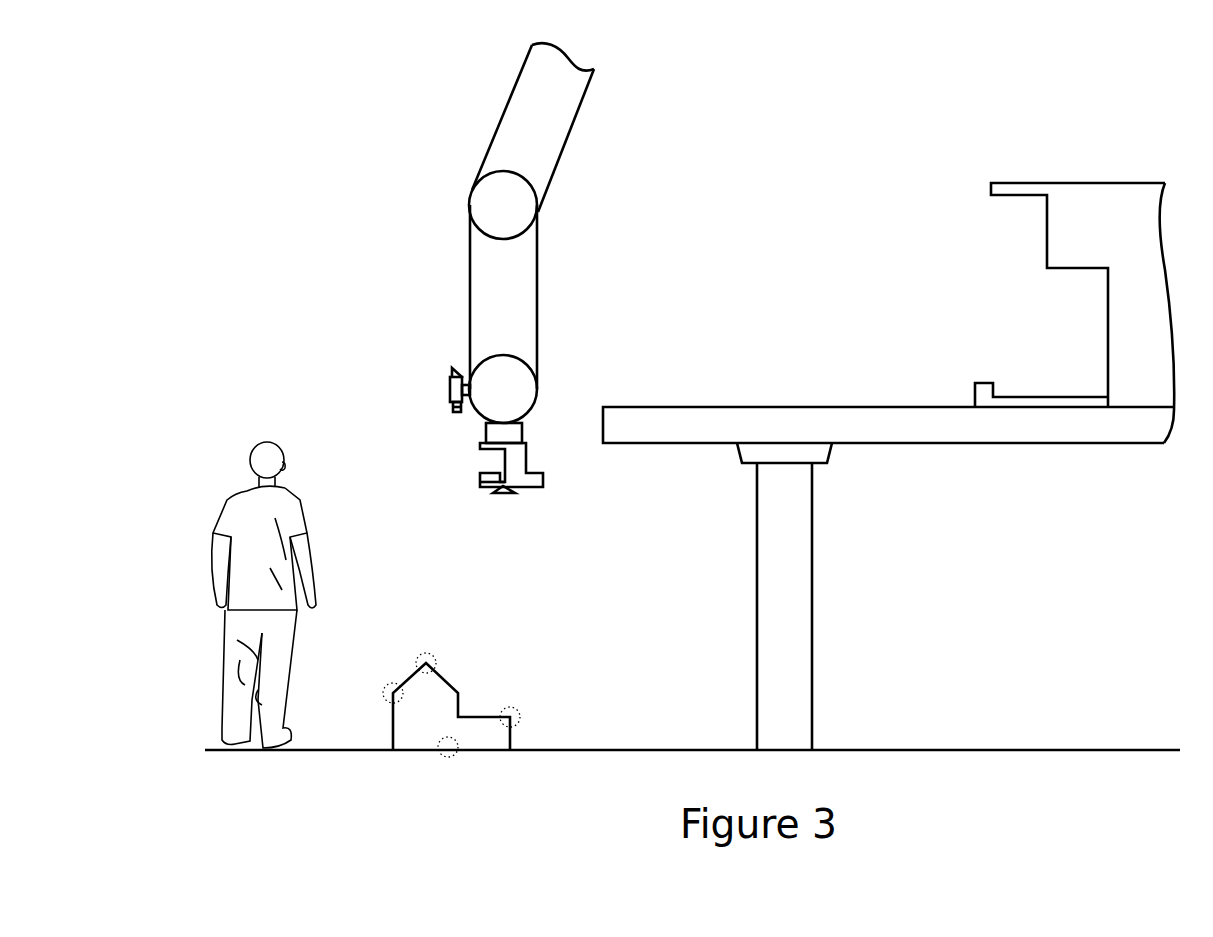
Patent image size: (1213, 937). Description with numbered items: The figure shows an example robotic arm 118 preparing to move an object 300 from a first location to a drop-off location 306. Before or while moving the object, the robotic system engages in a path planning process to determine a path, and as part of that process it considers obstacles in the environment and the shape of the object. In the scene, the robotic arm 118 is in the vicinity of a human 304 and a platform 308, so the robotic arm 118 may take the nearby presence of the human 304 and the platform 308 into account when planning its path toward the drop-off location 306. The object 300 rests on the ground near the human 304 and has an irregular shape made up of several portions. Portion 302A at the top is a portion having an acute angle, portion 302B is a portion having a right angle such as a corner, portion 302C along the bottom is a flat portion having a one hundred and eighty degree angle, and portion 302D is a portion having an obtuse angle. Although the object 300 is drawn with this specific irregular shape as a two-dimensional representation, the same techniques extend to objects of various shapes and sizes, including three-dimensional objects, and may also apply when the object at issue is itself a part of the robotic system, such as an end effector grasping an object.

The robotic arm 118 is at (579, 65).
The object 300 is at (525, 686).
The portion having an acute angle 302A is at (433, 653).
The portion having a right angle 302B is at (520, 716).
The flat portion 302C is at (455, 755).
The portion having an obtuse angle 302D is at (387, 692).
The human 304 is at (236, 496).
The drop-off location 306 is at (1038, 386).
The platform 308 is at (828, 461).